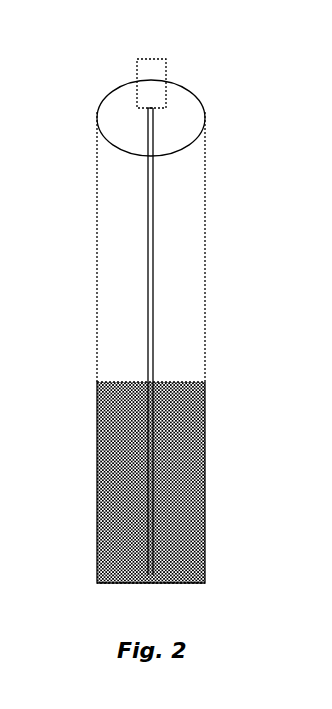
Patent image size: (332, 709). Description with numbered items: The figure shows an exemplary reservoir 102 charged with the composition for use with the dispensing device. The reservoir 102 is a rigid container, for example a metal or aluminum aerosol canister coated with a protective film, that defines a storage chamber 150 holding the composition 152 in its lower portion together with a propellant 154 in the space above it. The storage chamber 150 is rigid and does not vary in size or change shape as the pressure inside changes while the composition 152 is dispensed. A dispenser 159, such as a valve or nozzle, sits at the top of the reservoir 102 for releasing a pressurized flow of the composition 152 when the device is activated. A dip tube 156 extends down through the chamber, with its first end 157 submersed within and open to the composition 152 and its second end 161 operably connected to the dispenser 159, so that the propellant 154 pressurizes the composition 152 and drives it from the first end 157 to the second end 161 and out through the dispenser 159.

The reservoir 102 is at (142, 31).
The storage chamber 150 is at (205, 247).
The composition 152 is at (97, 423).
The propellant 154 is at (177, 188).
The dip tube 156 is at (143, 253).
The first end 157 is at (182, 587).
The dispenser 159 is at (143, 95).
The second end 161 is at (155, 113).